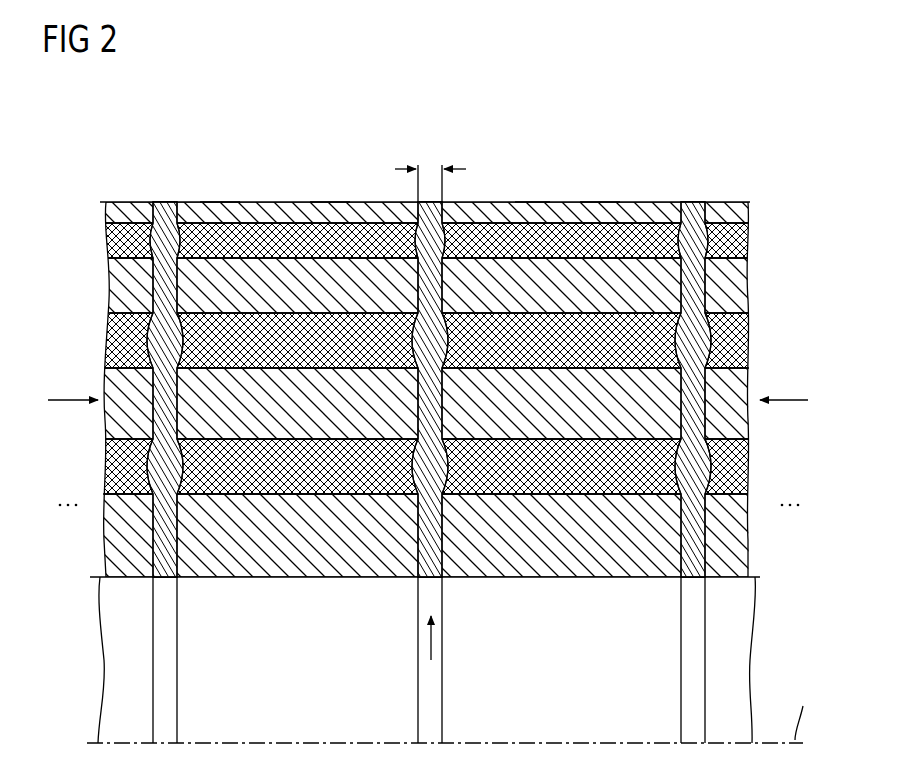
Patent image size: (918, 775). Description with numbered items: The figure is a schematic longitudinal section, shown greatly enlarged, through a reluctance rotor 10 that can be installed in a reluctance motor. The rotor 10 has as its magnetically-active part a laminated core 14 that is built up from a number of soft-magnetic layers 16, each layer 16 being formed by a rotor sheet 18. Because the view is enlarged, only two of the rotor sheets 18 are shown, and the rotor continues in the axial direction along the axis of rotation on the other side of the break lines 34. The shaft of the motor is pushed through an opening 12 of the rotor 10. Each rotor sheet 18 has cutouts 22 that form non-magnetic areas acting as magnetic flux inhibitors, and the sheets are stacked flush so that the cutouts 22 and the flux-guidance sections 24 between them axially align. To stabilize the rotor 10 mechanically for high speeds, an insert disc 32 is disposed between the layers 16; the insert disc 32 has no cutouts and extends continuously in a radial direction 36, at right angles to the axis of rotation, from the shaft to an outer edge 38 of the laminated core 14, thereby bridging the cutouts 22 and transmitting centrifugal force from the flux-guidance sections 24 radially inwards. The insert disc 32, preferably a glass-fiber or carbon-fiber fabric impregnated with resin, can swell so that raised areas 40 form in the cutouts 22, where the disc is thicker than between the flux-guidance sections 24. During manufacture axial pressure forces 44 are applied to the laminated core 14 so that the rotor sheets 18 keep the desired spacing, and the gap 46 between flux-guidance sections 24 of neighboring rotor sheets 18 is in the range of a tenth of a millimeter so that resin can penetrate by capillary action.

The rotor 10 is at (690, 86).
The opening 12 is at (126, 695).
The laminated core 14 is at (430, 535).
The layers 16 is at (329, 196).
The rotor sheet 18 is at (219, 200).
The cutouts 22 is at (430, 358).
The flux-guidance sections 24 is at (430, 348).
The insert disc 32 is at (163, 202).
The break lines 34 is at (100, 614).
The radial direction 36 is at (426, 643).
The outer edge 38 is at (286, 202).
The raised areas 40 is at (152, 234).
The axial pressure forces 44 is at (66, 399).
The gap 46 is at (430, 166).